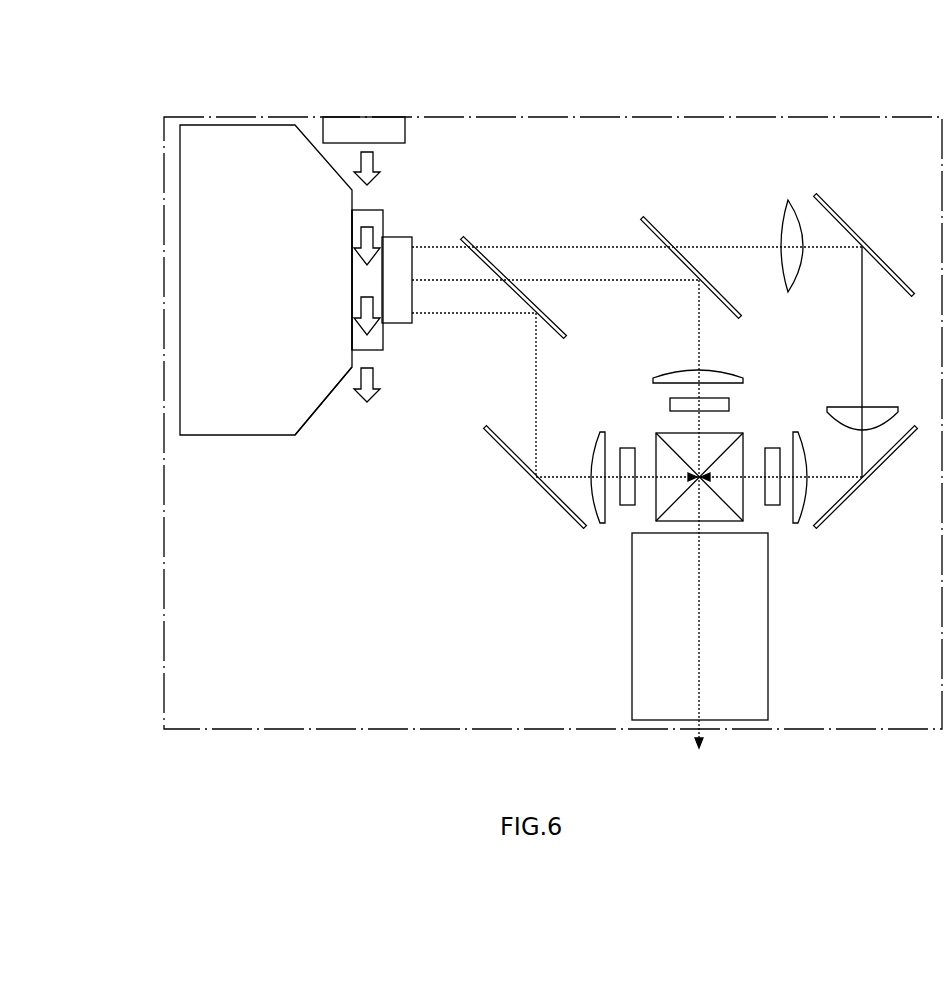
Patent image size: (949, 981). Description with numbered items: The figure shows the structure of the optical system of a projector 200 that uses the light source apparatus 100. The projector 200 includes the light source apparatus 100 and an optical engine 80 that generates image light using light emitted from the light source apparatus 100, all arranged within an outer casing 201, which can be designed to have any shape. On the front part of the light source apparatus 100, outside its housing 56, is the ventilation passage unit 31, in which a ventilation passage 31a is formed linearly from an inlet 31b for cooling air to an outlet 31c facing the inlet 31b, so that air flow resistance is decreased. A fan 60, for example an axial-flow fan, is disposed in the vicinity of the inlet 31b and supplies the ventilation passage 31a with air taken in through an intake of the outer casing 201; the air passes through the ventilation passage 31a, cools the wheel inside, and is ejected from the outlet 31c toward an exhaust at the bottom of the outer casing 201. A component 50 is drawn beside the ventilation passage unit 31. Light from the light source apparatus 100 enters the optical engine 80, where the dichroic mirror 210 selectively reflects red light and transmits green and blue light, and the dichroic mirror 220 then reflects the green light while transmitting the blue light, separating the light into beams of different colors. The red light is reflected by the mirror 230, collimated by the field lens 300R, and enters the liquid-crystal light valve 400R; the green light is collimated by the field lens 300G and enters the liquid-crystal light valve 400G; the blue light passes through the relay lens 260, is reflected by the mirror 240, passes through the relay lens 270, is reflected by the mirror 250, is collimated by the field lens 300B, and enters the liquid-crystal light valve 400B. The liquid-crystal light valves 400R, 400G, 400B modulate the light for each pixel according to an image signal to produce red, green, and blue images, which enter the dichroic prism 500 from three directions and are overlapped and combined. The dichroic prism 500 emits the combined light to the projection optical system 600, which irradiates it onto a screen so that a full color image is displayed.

The projector 200 is at (611, 82).
The outer casing 201 is at (800, 117).
The light source apparatus 100 is at (237, 440).
The housing 56 is at (313, 413).
The fan 60 is at (400, 131).
The ventilation passage unit 31 is at (352, 335).
The ventilation passage 31a is at (368, 276).
The inlet 31b is at (373, 210).
The outlet 31c is at (375, 352).
The heat sink 50 is at (398, 324).
The optical engine 80 is at (505, 535).
The dichroic mirror 210 is at (465, 238).
The dichroic mirror 220 is at (652, 224).
The mirror 230 is at (487, 432).
The mirror 240 is at (855, 236).
The mirror 250 is at (880, 462).
The relay lens 260 is at (783, 228).
The relay lens 270 is at (870, 408).
The field lens 300R is at (592, 462).
The field lens 300G is at (685, 372).
The field lens 300B is at (797, 440).
The liquid-crystal light valve 400R is at (626, 508).
The liquid-crystal light valve 400G is at (668, 404).
The liquid-crystal light valve 400B is at (774, 508).
The dichroic prism 500 is at (737, 430).
The projection optical system 600 is at (632, 646).